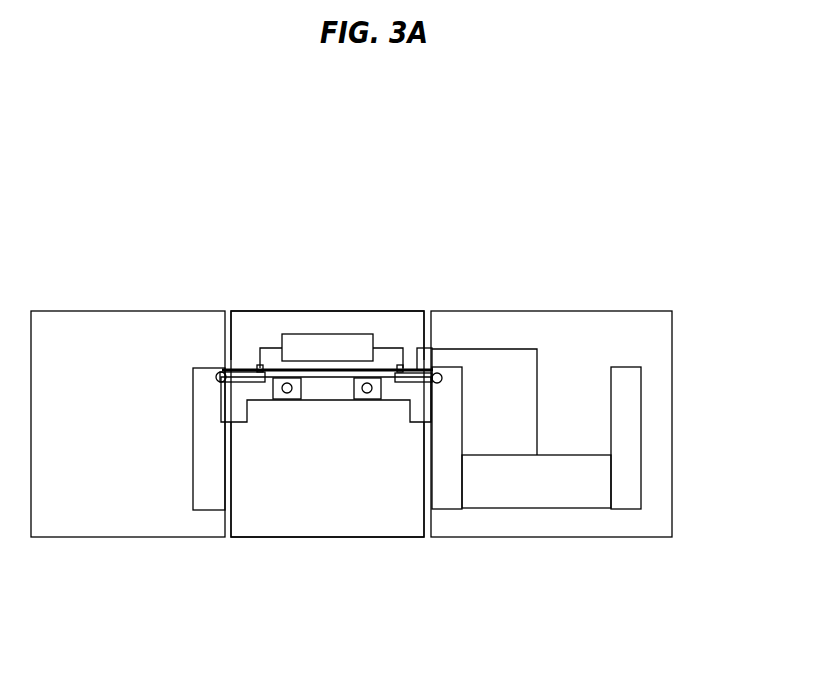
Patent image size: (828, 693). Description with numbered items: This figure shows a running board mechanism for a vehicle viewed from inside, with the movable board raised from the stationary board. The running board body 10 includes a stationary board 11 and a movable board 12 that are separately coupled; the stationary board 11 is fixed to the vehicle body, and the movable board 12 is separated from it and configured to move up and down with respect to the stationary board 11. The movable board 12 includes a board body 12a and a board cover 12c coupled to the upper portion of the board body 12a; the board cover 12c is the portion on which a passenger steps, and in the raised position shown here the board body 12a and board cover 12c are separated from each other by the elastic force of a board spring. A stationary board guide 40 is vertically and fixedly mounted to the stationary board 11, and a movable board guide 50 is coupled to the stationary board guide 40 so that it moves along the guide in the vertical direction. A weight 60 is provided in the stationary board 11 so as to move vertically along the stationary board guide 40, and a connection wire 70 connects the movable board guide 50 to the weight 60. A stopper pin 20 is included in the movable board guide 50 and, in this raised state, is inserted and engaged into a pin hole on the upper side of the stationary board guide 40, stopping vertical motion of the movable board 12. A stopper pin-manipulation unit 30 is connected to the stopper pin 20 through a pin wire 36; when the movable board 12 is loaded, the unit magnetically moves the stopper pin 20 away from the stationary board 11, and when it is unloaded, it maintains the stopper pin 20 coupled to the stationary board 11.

The running board body 10 is at (497, 297).
The stationary board 11 is at (117, 323).
The movable board 12 is at (368, 309).
The board body 12a is at (285, 517).
The board cover 12c is at (293, 323).
The stopper pin 20 is at (238, 363).
The stopper pin-manipulation unit 30 is at (327, 334).
The pin wire 36 is at (260, 347).
The stationary board guide 40 is at (200, 457).
The movable board guide 50 is at (337, 388).
The weight 60 is at (557, 488).
The connection wire 70 is at (538, 408).